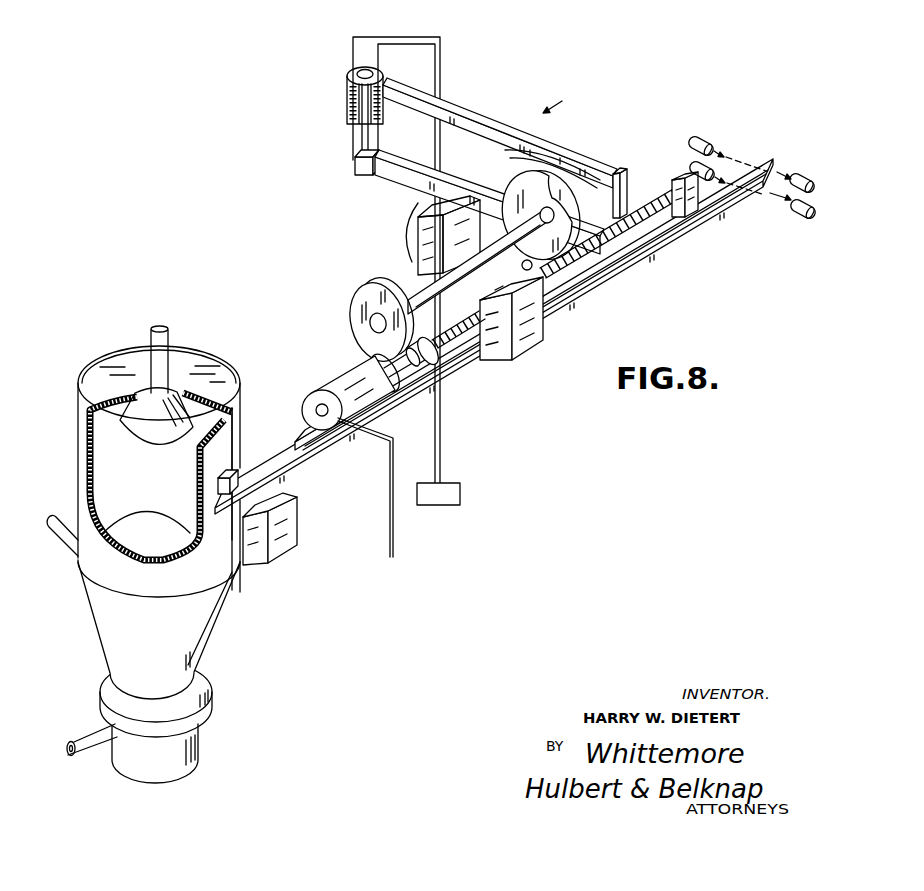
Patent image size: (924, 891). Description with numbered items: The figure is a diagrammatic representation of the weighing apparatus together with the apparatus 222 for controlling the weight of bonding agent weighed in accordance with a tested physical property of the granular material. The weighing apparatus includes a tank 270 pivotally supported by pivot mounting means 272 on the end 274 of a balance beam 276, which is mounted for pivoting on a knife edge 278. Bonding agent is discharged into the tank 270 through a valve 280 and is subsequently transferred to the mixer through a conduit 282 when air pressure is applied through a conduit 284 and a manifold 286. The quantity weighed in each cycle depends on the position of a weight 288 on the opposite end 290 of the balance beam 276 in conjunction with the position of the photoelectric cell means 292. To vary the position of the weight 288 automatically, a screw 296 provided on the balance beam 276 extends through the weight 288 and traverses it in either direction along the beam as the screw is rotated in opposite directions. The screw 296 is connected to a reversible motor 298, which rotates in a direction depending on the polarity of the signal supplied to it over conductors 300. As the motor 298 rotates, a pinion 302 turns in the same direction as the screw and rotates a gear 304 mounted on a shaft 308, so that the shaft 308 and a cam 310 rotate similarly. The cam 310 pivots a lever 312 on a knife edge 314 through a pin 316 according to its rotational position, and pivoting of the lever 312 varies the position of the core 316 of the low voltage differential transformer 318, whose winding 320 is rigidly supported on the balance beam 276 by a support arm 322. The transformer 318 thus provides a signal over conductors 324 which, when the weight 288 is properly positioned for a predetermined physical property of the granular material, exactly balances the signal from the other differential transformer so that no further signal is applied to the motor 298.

The apparatus for controlling the weight of bonding agent 222 is at (572, 100).
The tank 270 is at (223, 610).
The pivot mounting means 272 is at (217, 480).
The end of balance beam 274 is at (217, 537).
The balance beam 276 is at (608, 285).
The knife edge 278 is at (290, 496).
The valve 280 is at (165, 360).
The conduit 282 is at (63, 543).
The conduit 284 is at (93, 733).
The manifold 286 is at (212, 725).
The weight 288 is at (527, 361).
The end of balance beam 290 is at (667, 240).
The photoelectric cell means 292 is at (800, 207).
The screw 296 is at (643, 198).
The reversible motor 298 is at (333, 378).
The conductors 300 is at (392, 548).
The pinion 302 is at (433, 363).
The gear 304 is at (357, 303).
The shaft 308 is at (413, 288).
The cam 310 is at (515, 162).
The lever 312 is at (395, 197).
The knife edge 314 is at (422, 240).
The pin / core 316 is at (347, 107).
The linear variable differential transformer 318 is at (341, 98).
The winding 320 is at (348, 83).
The support arm 322 is at (485, 118).
The conductors 324 is at (460, 495).